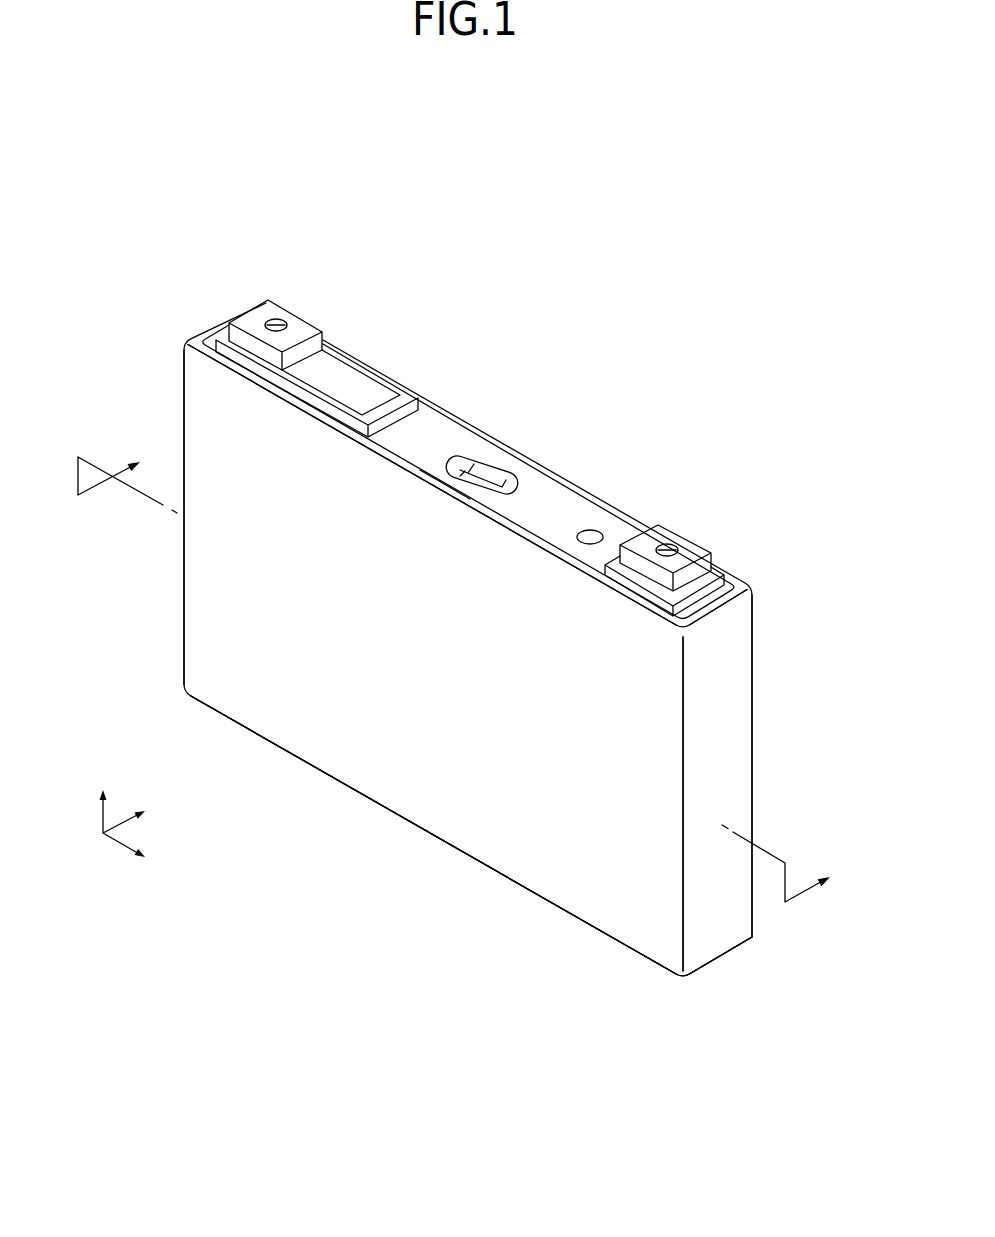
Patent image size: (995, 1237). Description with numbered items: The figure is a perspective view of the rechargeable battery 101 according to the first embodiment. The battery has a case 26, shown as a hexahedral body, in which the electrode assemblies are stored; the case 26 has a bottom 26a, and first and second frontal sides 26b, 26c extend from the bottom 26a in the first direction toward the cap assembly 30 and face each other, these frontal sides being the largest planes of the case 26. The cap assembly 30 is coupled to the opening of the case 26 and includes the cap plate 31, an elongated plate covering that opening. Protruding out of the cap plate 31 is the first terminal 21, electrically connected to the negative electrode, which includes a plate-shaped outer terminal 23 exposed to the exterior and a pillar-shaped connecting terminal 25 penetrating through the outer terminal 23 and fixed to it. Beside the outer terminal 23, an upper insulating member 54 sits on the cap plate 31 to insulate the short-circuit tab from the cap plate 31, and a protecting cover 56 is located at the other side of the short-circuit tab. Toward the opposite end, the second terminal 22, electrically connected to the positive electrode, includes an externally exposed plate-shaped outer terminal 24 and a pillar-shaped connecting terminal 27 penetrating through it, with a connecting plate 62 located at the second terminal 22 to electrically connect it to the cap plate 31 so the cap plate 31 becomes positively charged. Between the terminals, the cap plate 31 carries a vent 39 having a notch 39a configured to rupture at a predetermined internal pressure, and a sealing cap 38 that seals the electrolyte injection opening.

The rechargeable battery 101 is at (491, 261).
The first terminal 21 is at (312, 236).
The outer terminal 23 is at (256, 316).
The connecting terminal 25 is at (280, 318).
The protecting cover 56 is at (343, 380).
The upper insulating member 54 is at (407, 397).
The cap plate 31 is at (437, 431).
The cap assembly 30 is at (569, 481).
The vent 39 is at (480, 456).
The notch 39a is at (494, 482).
The sealing cap 38 is at (591, 530).
The second terminal 22 is at (668, 462).
The outer terminal 24 is at (657, 533).
The connecting terminal 27 is at (670, 547).
The connecting plate 62 is at (714, 565).
The case 26 is at (392, 818).
The bottom 26a is at (727, 955).
The first frontal side 26b is at (500, 830).
The second frontal side 26c is at (755, 719).